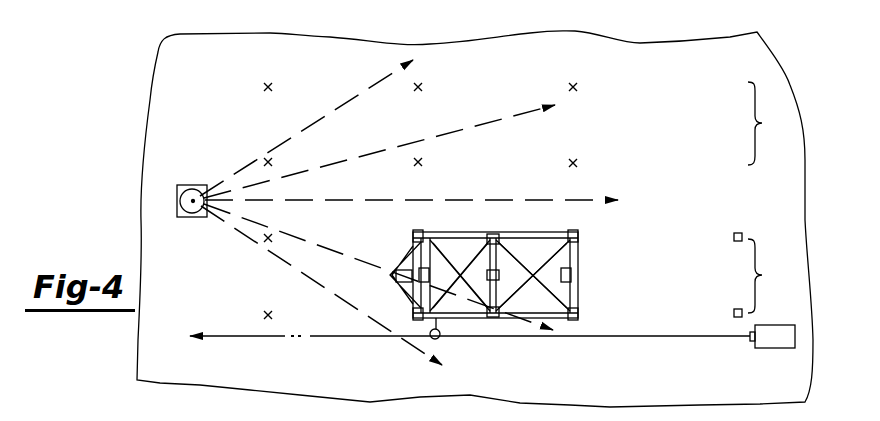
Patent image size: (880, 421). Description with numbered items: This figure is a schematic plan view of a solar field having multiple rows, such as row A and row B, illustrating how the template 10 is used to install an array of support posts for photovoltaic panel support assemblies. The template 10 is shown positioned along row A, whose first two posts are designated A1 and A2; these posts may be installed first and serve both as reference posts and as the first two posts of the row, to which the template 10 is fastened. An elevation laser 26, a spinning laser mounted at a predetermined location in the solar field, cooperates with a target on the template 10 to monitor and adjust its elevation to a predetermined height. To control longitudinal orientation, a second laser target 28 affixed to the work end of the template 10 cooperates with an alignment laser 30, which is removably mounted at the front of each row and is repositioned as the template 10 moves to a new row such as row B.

The template 10 is at (479, 227).
The elevation laser 26 is at (186, 192).
The second laser target 28 is at (440, 338).
The alignment laser 30 is at (782, 348).
The first post of row A A1 is at (745, 235).
The second post of row A A2 is at (732, 313).
The row A is at (765, 276).
The row B is at (765, 123).